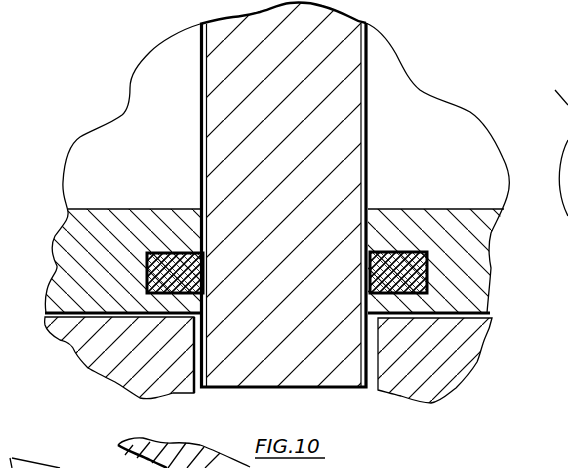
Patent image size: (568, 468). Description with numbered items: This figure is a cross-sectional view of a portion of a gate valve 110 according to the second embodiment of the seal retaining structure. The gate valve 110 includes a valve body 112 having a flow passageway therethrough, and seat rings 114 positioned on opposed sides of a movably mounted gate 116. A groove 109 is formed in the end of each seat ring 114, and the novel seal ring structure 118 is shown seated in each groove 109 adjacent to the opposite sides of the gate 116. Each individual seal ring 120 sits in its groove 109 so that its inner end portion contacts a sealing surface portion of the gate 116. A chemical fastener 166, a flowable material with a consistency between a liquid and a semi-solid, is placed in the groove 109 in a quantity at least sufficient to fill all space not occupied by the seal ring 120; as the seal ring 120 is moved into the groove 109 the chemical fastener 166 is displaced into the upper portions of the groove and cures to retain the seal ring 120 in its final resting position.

The groove 109 is at (52, 312).
The gate valve 110 is at (393, 33).
The valve body 112 is at (110, 362).
The seat rings 114 is at (138, 143).
The gate 116 is at (240, 70).
The seal ring structure 118 is at (218, 253).
The seal ring 120 is at (370, 274).
The chemical fastener 166 is at (411, 250).